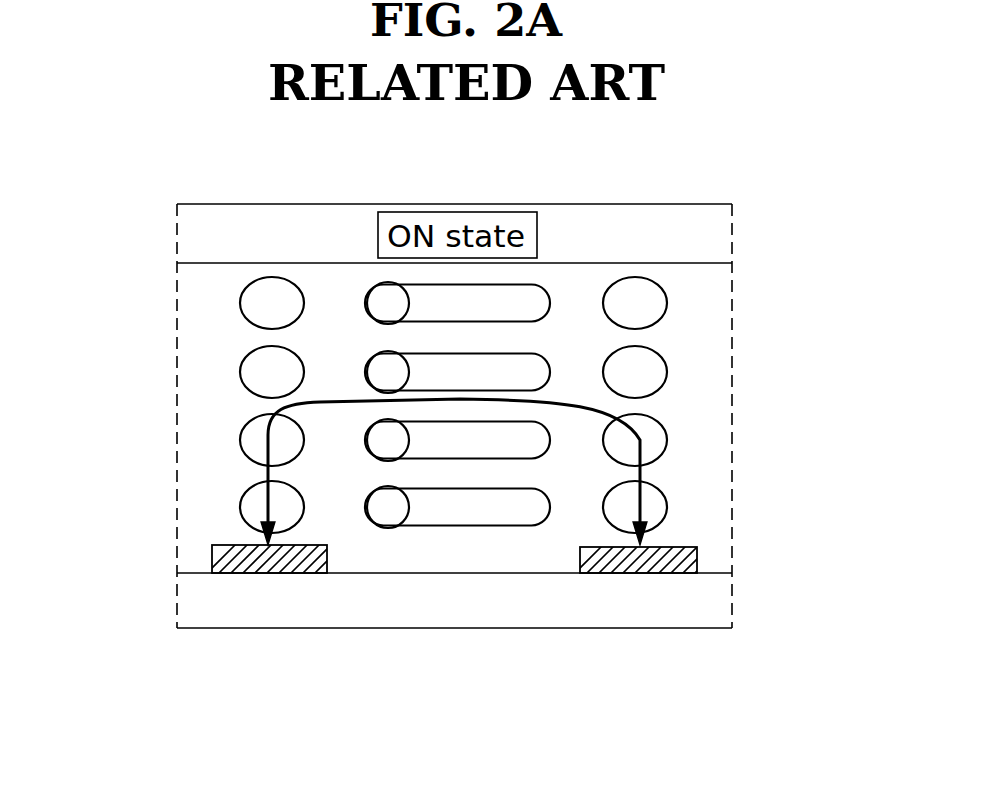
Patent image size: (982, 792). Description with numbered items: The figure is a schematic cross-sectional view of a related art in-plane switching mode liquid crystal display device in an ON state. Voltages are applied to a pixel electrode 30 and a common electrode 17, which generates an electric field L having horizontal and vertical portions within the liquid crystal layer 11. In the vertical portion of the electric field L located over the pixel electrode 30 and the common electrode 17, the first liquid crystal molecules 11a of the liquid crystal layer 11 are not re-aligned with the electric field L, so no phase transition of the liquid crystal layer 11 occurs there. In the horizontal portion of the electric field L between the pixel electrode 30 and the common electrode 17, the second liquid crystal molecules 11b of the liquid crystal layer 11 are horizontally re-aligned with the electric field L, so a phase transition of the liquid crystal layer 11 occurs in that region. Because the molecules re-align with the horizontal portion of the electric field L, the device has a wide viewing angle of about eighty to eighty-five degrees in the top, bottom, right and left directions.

The liquid crystal layer 11 is at (793, 265).
The first liquid crystal molecules 11a is at (262, 378).
The second liquid crystal molecules 11b is at (382, 367).
The electric field L is at (590, 404).
The pixel electrode 30 is at (280, 573).
The common electrode 17 is at (637, 573).